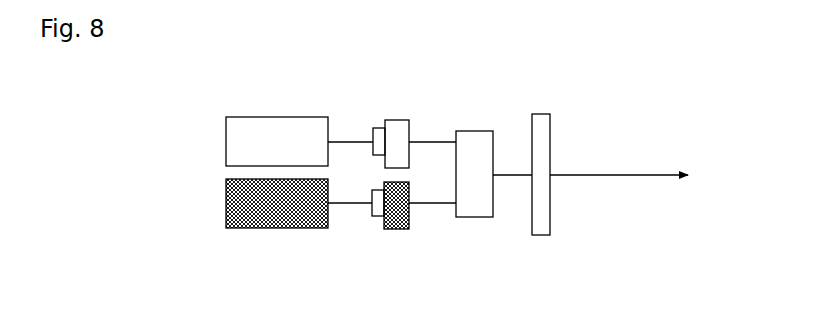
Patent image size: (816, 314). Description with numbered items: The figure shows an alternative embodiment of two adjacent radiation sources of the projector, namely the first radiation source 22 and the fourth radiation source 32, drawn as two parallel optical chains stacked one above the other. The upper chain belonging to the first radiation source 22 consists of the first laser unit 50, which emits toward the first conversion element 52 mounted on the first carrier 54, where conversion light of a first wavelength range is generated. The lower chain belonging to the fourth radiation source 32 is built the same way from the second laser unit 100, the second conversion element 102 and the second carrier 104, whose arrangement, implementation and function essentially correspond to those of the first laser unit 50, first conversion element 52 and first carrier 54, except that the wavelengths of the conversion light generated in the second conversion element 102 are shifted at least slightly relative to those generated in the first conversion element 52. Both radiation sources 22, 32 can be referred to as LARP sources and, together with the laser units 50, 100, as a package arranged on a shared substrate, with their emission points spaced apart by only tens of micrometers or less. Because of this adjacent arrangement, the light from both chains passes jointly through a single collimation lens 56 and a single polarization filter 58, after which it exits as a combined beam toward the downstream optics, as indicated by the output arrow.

The first radiation source 22 is at (217, 138).
The fourth radiation source 32 is at (217, 200).
The first laser unit 50 is at (278, 117).
The first conversion element 52 is at (380, 128).
The first carrier 54 is at (393, 120).
The collimation lens 56 is at (475, 131).
The polarization filter 58 is at (540, 114).
The second laser unit 100 is at (278, 228).
The second conversion element 102 is at (380, 216).
The second carrier 104 is at (395, 229).